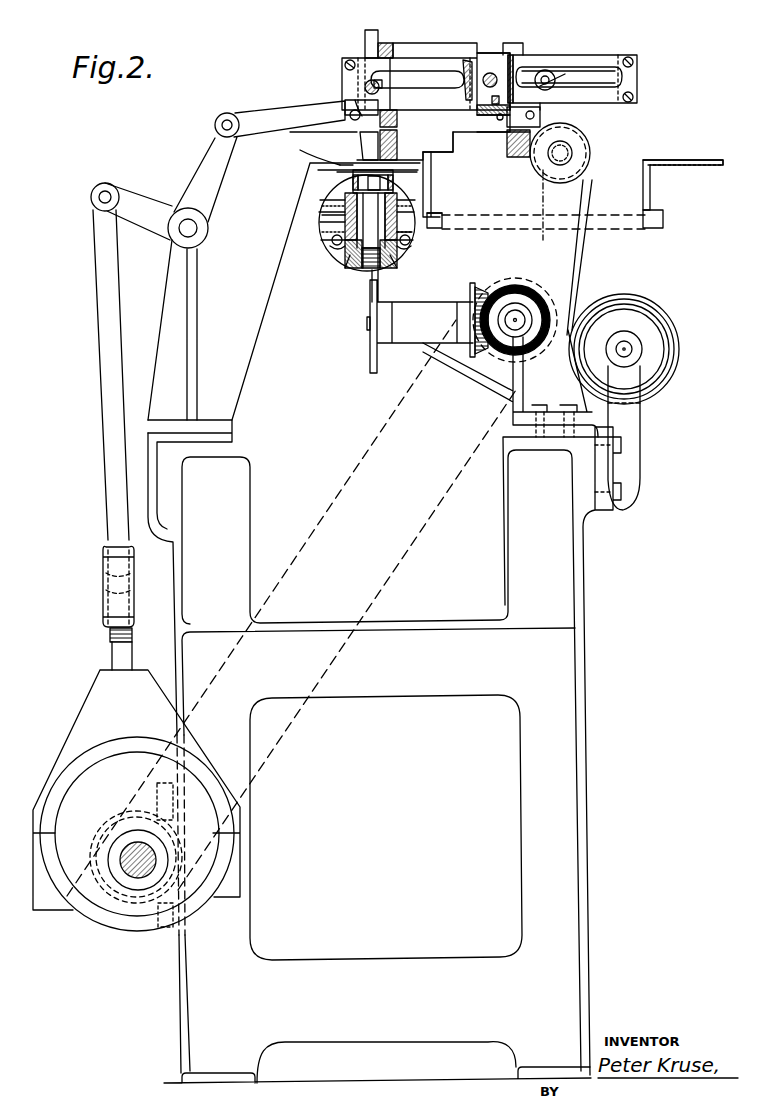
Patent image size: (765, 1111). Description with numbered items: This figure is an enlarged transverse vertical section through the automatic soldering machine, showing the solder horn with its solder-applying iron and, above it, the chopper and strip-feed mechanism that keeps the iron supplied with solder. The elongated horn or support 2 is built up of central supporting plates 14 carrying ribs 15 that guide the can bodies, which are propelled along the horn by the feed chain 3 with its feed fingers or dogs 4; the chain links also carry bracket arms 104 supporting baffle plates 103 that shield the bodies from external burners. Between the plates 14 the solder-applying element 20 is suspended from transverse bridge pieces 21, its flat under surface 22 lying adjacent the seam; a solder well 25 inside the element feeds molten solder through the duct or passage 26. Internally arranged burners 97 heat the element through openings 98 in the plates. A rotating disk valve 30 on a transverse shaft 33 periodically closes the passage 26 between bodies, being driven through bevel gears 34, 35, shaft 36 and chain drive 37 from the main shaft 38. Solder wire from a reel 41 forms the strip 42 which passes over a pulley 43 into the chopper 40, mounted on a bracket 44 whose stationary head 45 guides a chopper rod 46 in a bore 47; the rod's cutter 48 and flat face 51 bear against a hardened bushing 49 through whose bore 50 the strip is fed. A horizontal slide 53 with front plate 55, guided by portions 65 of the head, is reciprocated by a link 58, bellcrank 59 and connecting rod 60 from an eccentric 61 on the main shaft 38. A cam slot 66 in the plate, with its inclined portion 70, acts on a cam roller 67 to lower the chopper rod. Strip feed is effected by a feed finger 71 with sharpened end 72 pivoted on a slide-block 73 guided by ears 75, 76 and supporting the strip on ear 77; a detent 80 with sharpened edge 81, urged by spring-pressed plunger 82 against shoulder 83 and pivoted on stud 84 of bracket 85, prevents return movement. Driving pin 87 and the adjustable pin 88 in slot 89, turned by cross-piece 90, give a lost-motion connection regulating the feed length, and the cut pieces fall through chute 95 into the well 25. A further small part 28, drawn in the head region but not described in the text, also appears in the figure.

The elongated horn or support 2 is at (410, 240).
The feed chain 3 is at (445, 214).
The feed fingers or dogs 4 is at (443, 216).
The central supporting plates 14 is at (342, 262).
The ribs 15 is at (330, 215).
The solder-applying element 20 is at (352, 268).
The transverse bridge pieces 21 is at (393, 174).
The flat under surface 22 is at (352, 175).
The solder well 25 is at (373, 222).
The duct or passage 26 is at (378, 268).
The screw 28 is at (505, 98).
The valve 30 is at (368, 368).
The transverse shaft 33 is at (366, 324).
The bevel gear 34 is at (480, 288).
The bevel gear 35 is at (516, 280).
The shaft 36 is at (522, 312).
The chain drive 37 is at (403, 548).
The main shaft 38 is at (135, 865).
The chopper 40 is at (420, 50).
The reel 41 is at (655, 322).
The solder strip 42 is at (590, 186).
The pulley 43 is at (575, 140).
The bracket 44 is at (384, 607).
The stationary head 45 is at (392, 39).
The chopper rod 46 is at (368, 30).
The bore 47 is at (360, 58).
The cutter or shearing edge 48 is at (360, 145).
The hardened bushing 49 is at (410, 95).
The bore 50 is at (398, 144).
The flat face 51 is at (350, 113).
The horizontal slide 53 is at (418, 84).
The front plate 55 is at (582, 57).
The link 58 is at (250, 114).
The bellcrank 59 is at (150, 225).
The connecting rod 60 is at (108, 372).
The eccentric 61 is at (136, 800).
The forwardly-extending portions 65 is at (356, 100).
The cam slot 66 is at (410, 70).
The cam roller 67 is at (366, 82).
The inclined portion 70 is at (378, 90).
The feed finger 71 is at (492, 135).
The sharpened end 72 is at (470, 137).
The block 73 is at (493, 69).
The forwardly projecting ear 75 is at (482, 112).
The forwardly projecting ear 76 is at (490, 52).
The forwardly projecting ear 77 is at (488, 124).
The detent 80 is at (541, 113).
The sharpened edge 81 is at (548, 180).
The spring-pressed plunger 82 is at (516, 158).
The shoulder 83 is at (530, 120).
The stud 84 is at (523, 117).
The bracket 85 is at (538, 107).
The driving pin 87 is at (473, 112).
The driving pin 88 is at (547, 70).
The horizontal slot 89 is at (612, 77).
The cross-piece 90 is at (528, 128).
The chute 95 is at (340, 165).
The internally arranged burners 97 is at (330, 245).
The openings 98 is at (320, 225).
The baffle plates 103 is at (310, 168).
The bracket arms 104 is at (575, 194).